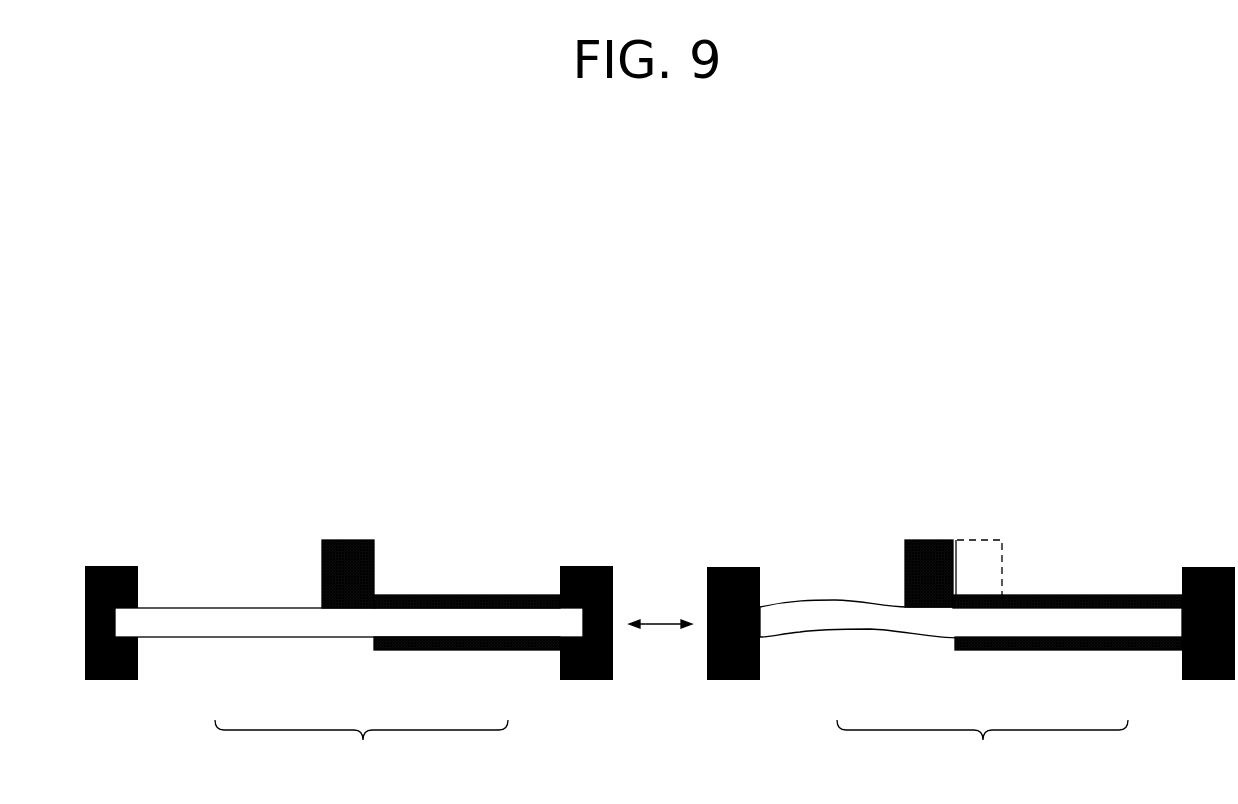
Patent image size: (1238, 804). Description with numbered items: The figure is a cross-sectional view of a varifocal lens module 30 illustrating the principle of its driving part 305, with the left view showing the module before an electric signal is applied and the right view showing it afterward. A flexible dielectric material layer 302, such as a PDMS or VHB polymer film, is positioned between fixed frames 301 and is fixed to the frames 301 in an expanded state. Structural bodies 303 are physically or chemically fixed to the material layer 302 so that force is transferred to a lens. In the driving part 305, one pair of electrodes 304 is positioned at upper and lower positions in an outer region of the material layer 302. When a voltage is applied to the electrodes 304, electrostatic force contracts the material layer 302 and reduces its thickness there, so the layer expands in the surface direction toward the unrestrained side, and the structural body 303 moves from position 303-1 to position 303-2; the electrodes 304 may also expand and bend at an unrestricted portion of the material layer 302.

The varifocal lens module 30 is at (692, 240).
The fixed frame 301 is at (570, 560).
The material layer 302 is at (234, 650).
The structural body 303 is at (350, 532).
The structural body position before movement 303-1 is at (988, 532).
The structural body position after movement 303-2 is at (917, 532).
The electrode 304 is at (496, 608).
The driving part 305 is at (671, 750).